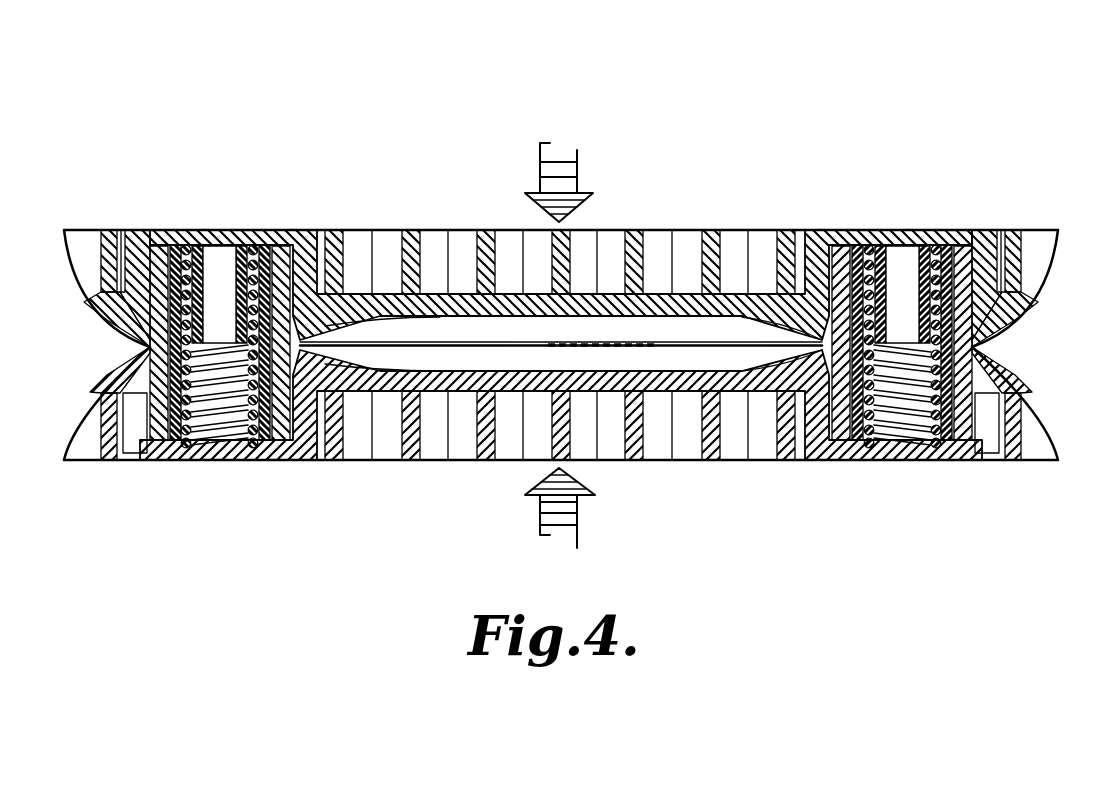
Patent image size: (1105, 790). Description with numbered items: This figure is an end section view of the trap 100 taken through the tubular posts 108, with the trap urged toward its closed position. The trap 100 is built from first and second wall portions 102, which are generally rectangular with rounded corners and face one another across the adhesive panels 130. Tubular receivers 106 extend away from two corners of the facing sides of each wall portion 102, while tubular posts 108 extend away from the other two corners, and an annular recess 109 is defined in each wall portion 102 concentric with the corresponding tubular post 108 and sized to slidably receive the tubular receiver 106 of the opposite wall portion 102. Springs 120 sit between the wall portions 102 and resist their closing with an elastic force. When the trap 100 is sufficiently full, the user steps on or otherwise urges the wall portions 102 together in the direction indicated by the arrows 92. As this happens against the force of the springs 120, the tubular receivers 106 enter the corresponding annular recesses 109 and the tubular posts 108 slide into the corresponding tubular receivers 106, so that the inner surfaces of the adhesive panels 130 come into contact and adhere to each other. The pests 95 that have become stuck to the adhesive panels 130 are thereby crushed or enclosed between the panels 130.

The trap 100 is at (198, 124).
The arrows 92 is at (578, 173).
The pests 95 is at (545, 342).
The wall portions 102 is at (966, 230).
The tubular receivers 106 is at (283, 230).
The tubular posts 108 is at (259, 456).
The annular recess 109 is at (148, 322).
The springs 120 is at (177, 460).
The adhesive panels 130 is at (398, 340).